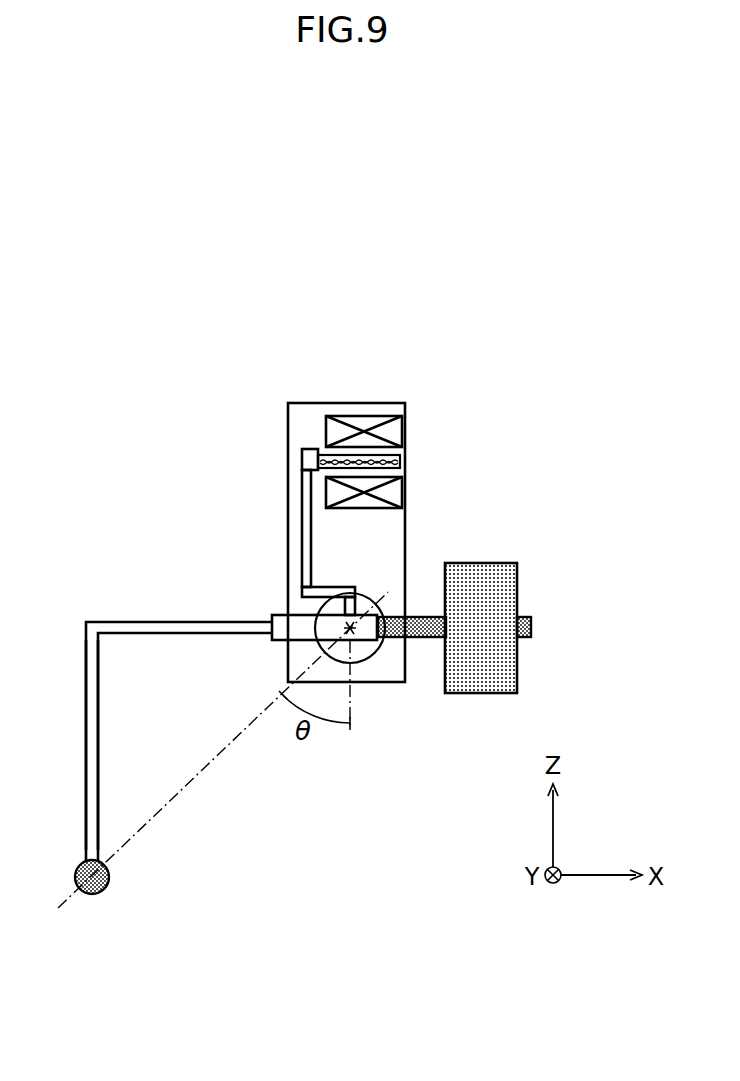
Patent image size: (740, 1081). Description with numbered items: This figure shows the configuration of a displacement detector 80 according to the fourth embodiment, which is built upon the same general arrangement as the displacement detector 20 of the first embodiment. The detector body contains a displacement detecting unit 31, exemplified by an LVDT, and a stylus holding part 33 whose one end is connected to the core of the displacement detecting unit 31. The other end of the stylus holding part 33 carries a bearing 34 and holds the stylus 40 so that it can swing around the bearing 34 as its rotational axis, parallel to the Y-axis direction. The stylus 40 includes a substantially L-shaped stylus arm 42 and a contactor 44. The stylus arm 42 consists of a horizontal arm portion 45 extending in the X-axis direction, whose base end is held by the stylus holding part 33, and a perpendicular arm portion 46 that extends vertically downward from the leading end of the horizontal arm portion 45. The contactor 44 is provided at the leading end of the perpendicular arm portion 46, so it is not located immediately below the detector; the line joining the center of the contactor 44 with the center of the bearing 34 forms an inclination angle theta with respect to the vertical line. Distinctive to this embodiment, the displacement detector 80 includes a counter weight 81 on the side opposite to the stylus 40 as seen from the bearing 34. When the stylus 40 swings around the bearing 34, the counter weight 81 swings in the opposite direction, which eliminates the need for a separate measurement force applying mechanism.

The displacement detector 20 is at (331, 533).
The displacement detector 80 is at (322, 403).
The displacement detecting unit 31 is at (313, 423).
The stylus holding part 33 is at (302, 570).
The bearing 34 is at (384, 656).
The counter weight 81 is at (483, 572).
The stylus 40 is at (150, 733).
The stylus arm 42 is at (137, 633).
The contactor 44 is at (100, 860).
The horizontal arm portion 45 is at (113, 624).
The perpendicular arm portion 46 is at (88, 655).